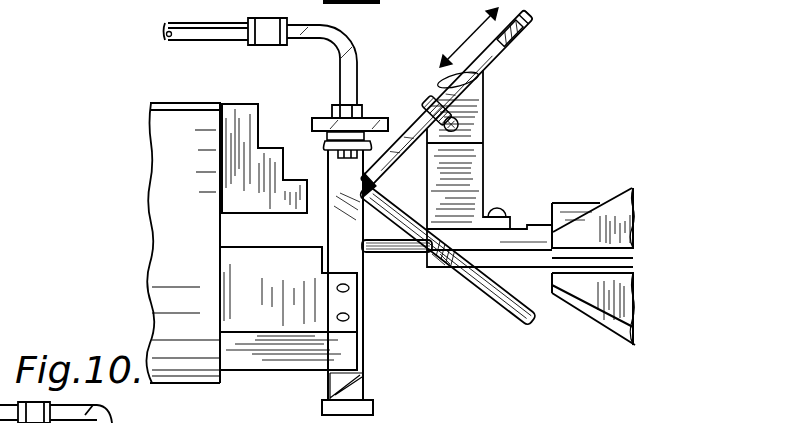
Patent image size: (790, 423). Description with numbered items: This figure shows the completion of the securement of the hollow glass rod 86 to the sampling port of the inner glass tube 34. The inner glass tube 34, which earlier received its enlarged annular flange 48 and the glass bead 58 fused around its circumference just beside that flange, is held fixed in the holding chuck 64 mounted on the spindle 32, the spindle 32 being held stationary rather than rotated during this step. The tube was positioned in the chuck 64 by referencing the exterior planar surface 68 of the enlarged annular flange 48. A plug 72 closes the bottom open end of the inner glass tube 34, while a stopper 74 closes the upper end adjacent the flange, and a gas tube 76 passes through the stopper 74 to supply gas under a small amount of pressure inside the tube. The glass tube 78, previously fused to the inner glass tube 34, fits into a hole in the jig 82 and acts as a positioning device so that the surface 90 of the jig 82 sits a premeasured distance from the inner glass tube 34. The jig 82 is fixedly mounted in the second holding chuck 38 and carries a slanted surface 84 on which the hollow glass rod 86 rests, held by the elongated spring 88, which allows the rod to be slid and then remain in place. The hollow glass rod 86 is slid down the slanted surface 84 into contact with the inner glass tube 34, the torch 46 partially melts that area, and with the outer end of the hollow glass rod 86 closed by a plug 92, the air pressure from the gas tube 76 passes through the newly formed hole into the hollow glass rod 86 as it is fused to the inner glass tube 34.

The spindle 32 is at (151, 196).
The inner glass tube 34 is at (325, 235).
The second holding chuck 38 is at (636, 215).
The torch 46 is at (503, 307).
The enlarged annular flange 48 is at (320, 128).
The bead 58 is at (325, 147).
The holding chuck 64 is at (366, 362).
The exterior planar surface 68 is at (384, 117).
The plug 72 is at (374, 410).
The stopper 74 is at (333, 107).
The gas tube 76 is at (210, 41).
The glass tube 78 is at (384, 254).
The jig 82 is at (485, 178).
The slanted surface 84 is at (486, 88).
The hollow glass rod 86 is at (507, 55).
The elongated spring 88 is at (423, 100).
The surface 90 is at (483, 143).
The plug 92 is at (532, 14).